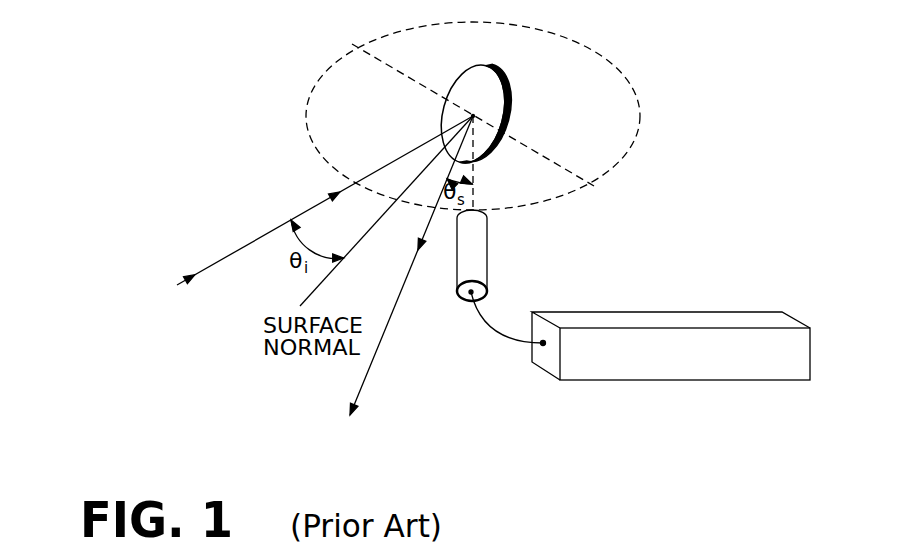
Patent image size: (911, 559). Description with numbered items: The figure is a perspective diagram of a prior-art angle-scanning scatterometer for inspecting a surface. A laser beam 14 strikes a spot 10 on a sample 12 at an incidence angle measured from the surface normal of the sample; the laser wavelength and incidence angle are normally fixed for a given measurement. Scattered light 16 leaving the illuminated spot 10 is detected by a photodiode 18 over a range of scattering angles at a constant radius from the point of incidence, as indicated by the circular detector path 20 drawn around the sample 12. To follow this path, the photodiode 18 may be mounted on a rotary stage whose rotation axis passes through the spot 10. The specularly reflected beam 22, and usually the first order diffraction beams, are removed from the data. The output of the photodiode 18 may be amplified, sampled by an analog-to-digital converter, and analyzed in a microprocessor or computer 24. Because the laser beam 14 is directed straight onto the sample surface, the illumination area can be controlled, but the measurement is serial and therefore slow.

The spot 10 is at (473, 116).
The sample 12 is at (508, 95).
The laser beam 14 is at (218, 262).
The scattered light 16 is at (478, 202).
The photodiode 18 is at (488, 237).
The circular detector path 20 is at (643, 117).
The specularly reflected beam 22 is at (373, 360).
The microprocessor or computer 24 is at (658, 380).